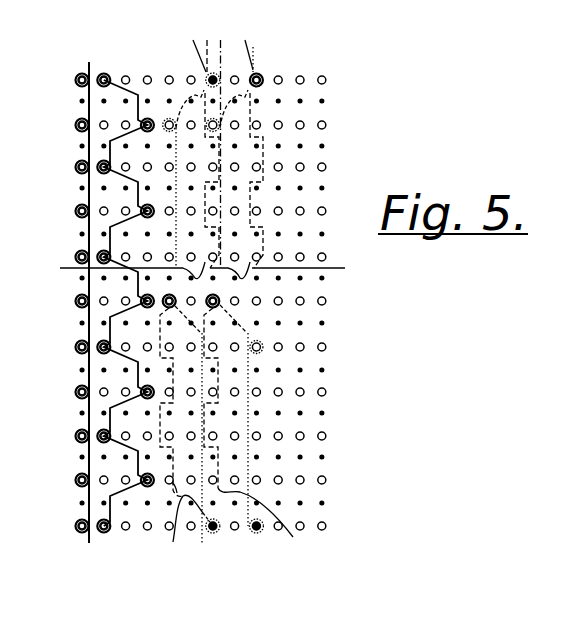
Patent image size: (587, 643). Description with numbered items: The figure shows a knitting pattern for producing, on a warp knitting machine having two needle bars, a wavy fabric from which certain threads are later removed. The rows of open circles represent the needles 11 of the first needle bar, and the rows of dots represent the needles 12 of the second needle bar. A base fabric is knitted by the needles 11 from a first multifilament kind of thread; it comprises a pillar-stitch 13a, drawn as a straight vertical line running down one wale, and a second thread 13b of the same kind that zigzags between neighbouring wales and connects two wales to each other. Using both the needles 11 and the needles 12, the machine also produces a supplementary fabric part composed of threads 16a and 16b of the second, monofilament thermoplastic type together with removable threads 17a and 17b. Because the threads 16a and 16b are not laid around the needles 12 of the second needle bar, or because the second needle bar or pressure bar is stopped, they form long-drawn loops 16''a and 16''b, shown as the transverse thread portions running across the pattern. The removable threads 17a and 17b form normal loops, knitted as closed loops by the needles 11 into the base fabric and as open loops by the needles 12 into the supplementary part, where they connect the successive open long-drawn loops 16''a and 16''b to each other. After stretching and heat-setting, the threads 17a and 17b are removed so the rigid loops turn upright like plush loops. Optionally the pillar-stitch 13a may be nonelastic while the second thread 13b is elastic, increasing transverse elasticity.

The needles of the first needle bar 11 is at (80, 255).
The needles of the second needle bar 12 is at (79, 146).
The pillar-stitch 13a is at (55, 572).
The second thread 13b is at (108, 568).
The thread of the second monofilament thermoplastic type 16a is at (203, 532).
The thread of the second monofilament thermoplastic type 16b is at (245, 540).
The removable thread 17a is at (205, 543).
The removable thread 17b is at (247, 543).
The long-drawn loop 16''a is at (114, 408).
The long-drawn loop 16''b is at (302, 408).